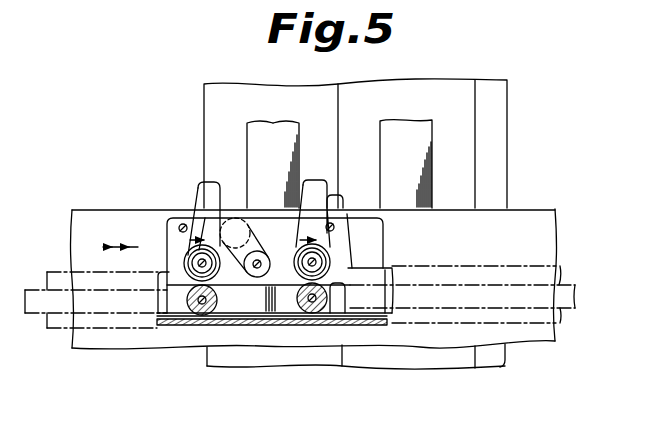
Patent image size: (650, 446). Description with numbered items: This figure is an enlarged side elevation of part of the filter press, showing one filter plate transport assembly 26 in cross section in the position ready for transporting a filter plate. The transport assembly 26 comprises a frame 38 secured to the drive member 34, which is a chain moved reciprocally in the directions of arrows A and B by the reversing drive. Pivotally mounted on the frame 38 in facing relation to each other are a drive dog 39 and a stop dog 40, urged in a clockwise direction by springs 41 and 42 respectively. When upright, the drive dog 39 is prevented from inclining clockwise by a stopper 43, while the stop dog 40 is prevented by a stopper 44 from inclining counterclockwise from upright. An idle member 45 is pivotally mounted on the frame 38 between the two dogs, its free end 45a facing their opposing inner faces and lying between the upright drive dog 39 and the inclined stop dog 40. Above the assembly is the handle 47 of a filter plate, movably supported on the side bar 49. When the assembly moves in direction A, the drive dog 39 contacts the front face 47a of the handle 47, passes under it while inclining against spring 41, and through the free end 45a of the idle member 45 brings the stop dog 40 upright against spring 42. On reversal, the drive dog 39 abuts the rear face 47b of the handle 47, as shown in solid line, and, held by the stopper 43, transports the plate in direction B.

The filter plate transport assembly 26 is at (157, 236).
The drive member 34 is at (255, 318).
The frame 38 is at (161, 222).
The drive dog 39 is at (311, 188).
The stop dog 40 is at (212, 193).
The spring 41 is at (333, 268).
The spring 42 is at (178, 285).
The stopper 43 is at (343, 215).
The stopper 44 is at (182, 216).
The idle member 45 is at (264, 240).
The free end 45a is at (260, 220).
The handle 47 is at (264, 123).
The front face 47a is at (246, 134).
The rear face 47b is at (300, 134).
The side bar 49 is at (533, 217).